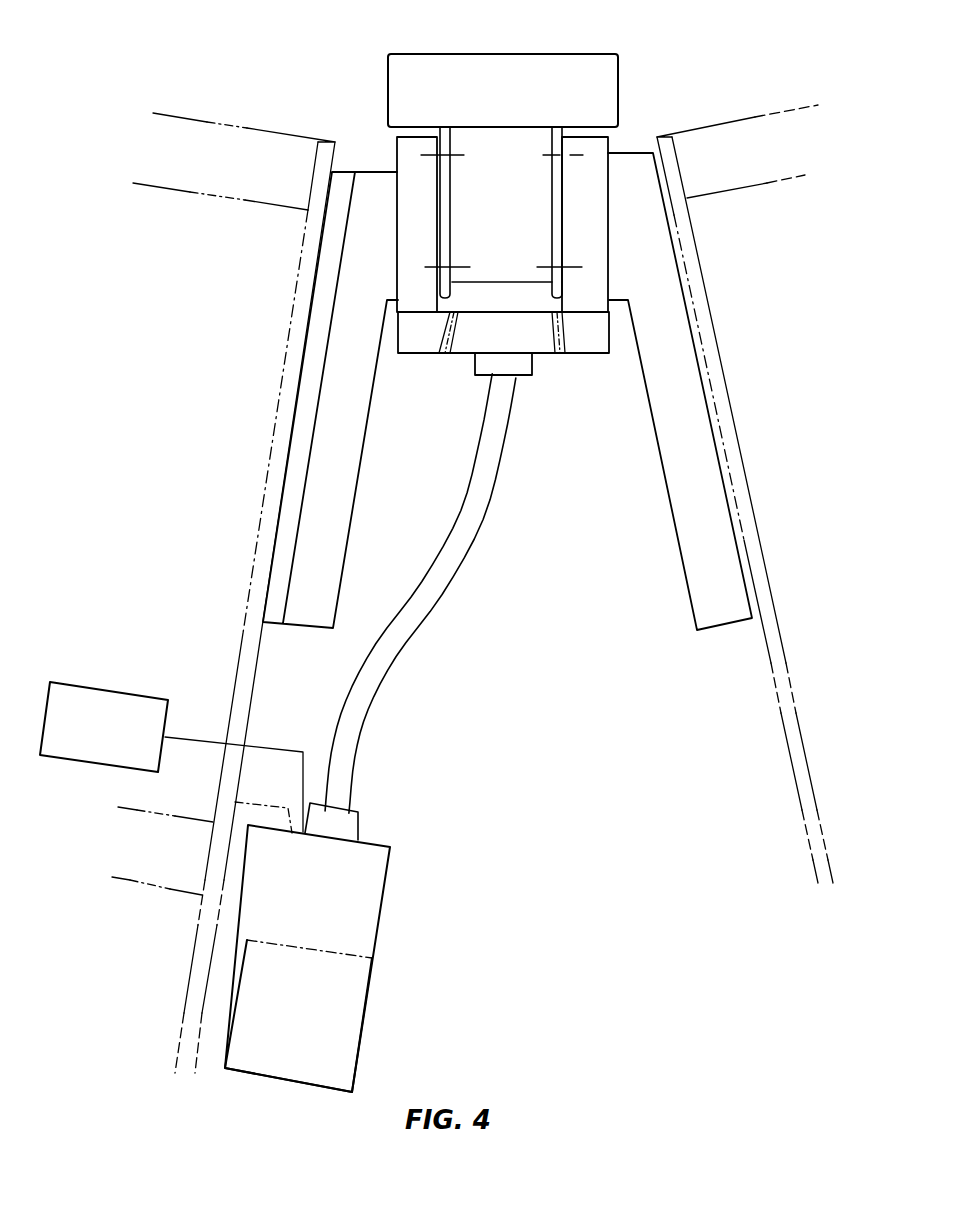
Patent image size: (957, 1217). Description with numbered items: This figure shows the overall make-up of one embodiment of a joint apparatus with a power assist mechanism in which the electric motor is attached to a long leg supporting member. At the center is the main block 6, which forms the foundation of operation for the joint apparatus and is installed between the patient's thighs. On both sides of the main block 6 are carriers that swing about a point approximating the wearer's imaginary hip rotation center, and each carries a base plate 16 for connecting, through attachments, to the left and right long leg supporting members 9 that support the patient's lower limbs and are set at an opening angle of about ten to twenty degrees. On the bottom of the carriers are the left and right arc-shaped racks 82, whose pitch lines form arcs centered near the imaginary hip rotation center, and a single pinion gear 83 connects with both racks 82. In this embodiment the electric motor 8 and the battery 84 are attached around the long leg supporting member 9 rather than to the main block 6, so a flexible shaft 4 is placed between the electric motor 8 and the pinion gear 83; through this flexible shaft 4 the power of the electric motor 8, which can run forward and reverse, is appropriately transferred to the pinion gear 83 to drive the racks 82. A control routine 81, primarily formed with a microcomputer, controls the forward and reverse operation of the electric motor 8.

The flexible shaft 4 is at (438, 568).
The main block 6 is at (510, 64).
The electric motor 8 is at (380, 912).
The long leg supporting member 9 is at (252, 692).
The base plate 16 is at (345, 490).
The control routine 81 is at (108, 692).
The arc-shaped rack 82 is at (422, 345).
The pinion gear 83 is at (540, 348).
The battery 84 is at (363, 1020).